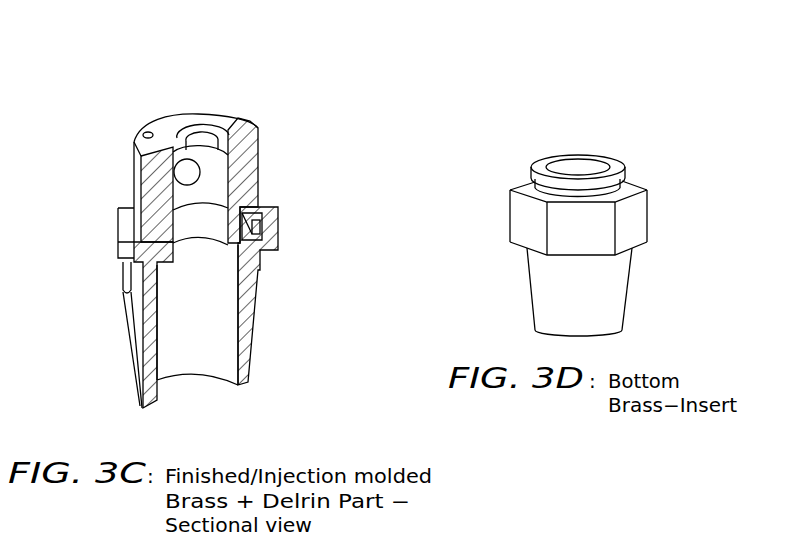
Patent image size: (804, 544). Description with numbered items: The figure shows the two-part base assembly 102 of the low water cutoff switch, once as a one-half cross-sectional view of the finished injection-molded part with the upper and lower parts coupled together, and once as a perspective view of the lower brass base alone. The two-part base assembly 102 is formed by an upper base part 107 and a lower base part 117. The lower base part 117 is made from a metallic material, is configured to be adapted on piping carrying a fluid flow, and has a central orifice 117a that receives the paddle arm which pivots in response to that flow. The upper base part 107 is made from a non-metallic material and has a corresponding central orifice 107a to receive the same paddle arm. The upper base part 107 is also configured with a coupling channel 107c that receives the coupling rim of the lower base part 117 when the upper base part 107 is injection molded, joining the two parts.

In FIG. 3C, the two-part base assembly 102 is at (134, 102).
In FIG. 3D, the two-part base assembly 102 is at (661, 167).
In FIG. 3C, the upper base part 107 is at (250, 147).
In FIG. 3C, the central orifice 107a is at (213, 183).
In FIG. 3C, the coupling channel 107c is at (257, 204).
In FIG. 3C, the lower base part 117 is at (267, 238).
In FIG. 3D, the lower base part 117 is at (530, 176).
In FIG. 3C, the central orifice 117a is at (203, 291).